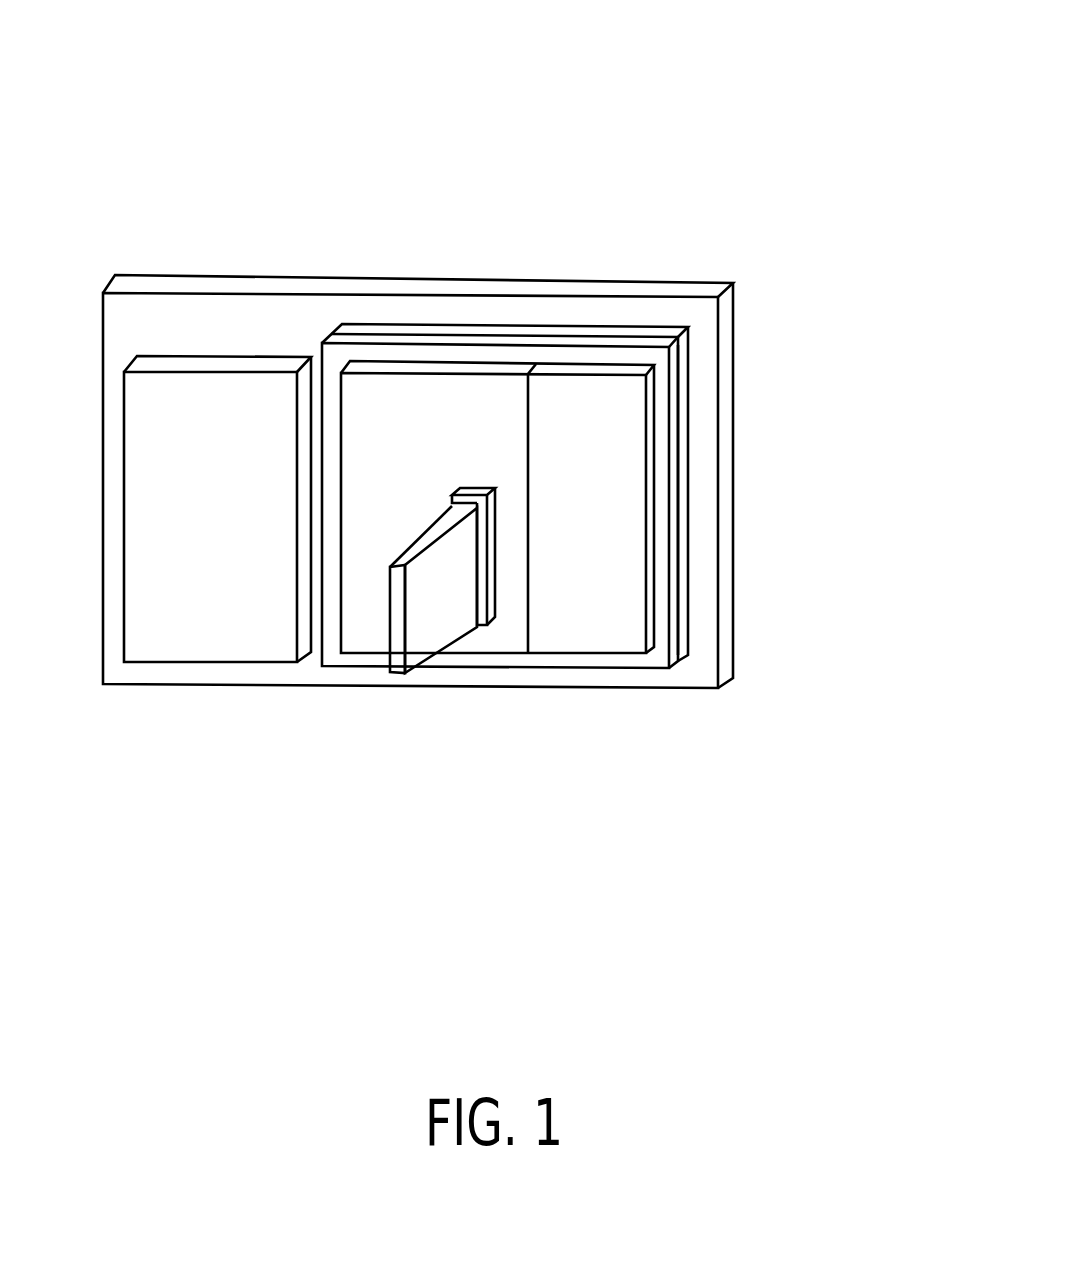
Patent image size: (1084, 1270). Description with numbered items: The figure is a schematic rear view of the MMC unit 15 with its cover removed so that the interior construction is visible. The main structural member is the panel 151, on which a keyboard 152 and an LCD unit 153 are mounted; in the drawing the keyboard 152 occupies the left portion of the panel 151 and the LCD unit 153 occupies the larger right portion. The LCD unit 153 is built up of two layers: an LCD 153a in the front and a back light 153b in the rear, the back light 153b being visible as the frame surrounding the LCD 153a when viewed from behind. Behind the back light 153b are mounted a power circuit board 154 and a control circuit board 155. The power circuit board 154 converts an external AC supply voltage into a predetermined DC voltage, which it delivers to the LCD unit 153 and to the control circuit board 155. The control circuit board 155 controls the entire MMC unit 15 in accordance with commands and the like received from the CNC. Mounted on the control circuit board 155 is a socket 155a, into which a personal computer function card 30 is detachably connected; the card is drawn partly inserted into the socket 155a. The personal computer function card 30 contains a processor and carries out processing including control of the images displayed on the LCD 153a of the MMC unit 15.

The MMC unit 15 is at (339, 243).
The panel 151 is at (413, 277).
The keyboard 152 is at (158, 648).
The LCD unit 153 is at (586, 330).
The LCD 153a is at (648, 328).
The back light 153b is at (672, 398).
The power circuit board 154 is at (615, 640).
The control circuit board 155 is at (352, 645).
The socket 155a is at (489, 622).
The personal computer function card 30 is at (413, 662).